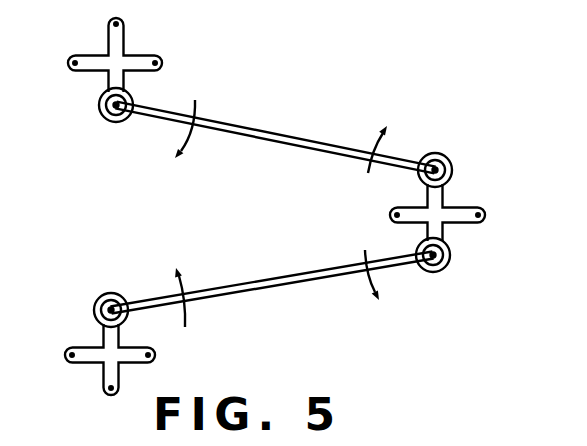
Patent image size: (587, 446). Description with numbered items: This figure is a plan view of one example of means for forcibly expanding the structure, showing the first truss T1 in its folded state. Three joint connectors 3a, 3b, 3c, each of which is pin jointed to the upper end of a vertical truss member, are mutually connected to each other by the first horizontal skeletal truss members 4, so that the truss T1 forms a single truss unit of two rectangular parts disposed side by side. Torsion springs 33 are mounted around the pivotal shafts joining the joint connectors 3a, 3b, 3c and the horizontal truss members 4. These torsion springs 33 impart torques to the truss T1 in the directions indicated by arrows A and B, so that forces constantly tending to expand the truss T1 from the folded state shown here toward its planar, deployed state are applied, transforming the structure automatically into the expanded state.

The first horizontal skeletal truss member 4 is at (298, 136).
The torsion spring 33 is at (99, 107).
The joint connector 3a is at (80, 359).
The joint connector 3b is at (462, 205).
The joint connector 3c is at (93, 53).
The first truss T1 is at (250, 124).
The arrow A is at (177, 213).
The arrow B is at (386, 217).